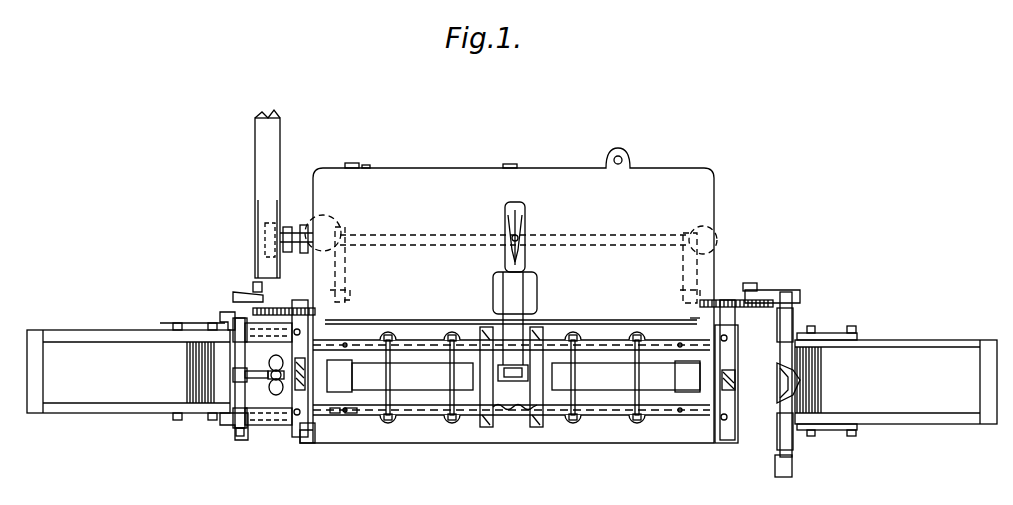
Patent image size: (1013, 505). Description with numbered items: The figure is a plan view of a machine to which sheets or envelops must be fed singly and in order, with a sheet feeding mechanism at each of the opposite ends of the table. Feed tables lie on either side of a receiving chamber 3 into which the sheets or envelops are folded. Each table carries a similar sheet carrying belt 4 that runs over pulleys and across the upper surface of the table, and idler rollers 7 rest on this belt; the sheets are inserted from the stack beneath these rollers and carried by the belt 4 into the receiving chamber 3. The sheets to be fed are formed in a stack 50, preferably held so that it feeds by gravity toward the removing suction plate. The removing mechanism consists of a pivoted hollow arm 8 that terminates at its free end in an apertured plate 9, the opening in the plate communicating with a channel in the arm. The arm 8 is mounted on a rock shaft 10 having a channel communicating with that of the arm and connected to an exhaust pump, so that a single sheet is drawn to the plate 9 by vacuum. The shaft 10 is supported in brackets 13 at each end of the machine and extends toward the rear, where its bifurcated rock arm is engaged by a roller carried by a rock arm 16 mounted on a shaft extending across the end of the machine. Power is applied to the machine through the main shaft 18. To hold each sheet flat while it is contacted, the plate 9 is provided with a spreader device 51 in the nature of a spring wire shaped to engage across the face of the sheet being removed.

The receiving chamber 3 is at (513, 398).
The sheet carrying belt 4 is at (513, 376).
The idler rollers 7 is at (580, 368).
The pivoted hollow arm 8 is at (256, 386).
The apertured plate 9 is at (275, 367).
The rock shaft 10 is at (783, 356).
The brackets 13 is at (258, 425).
The rock arm 16 is at (233, 397).
The main shaft 18 is at (608, 236).
The stack 50 is at (192, 381).
The spreader device 51 is at (283, 393).